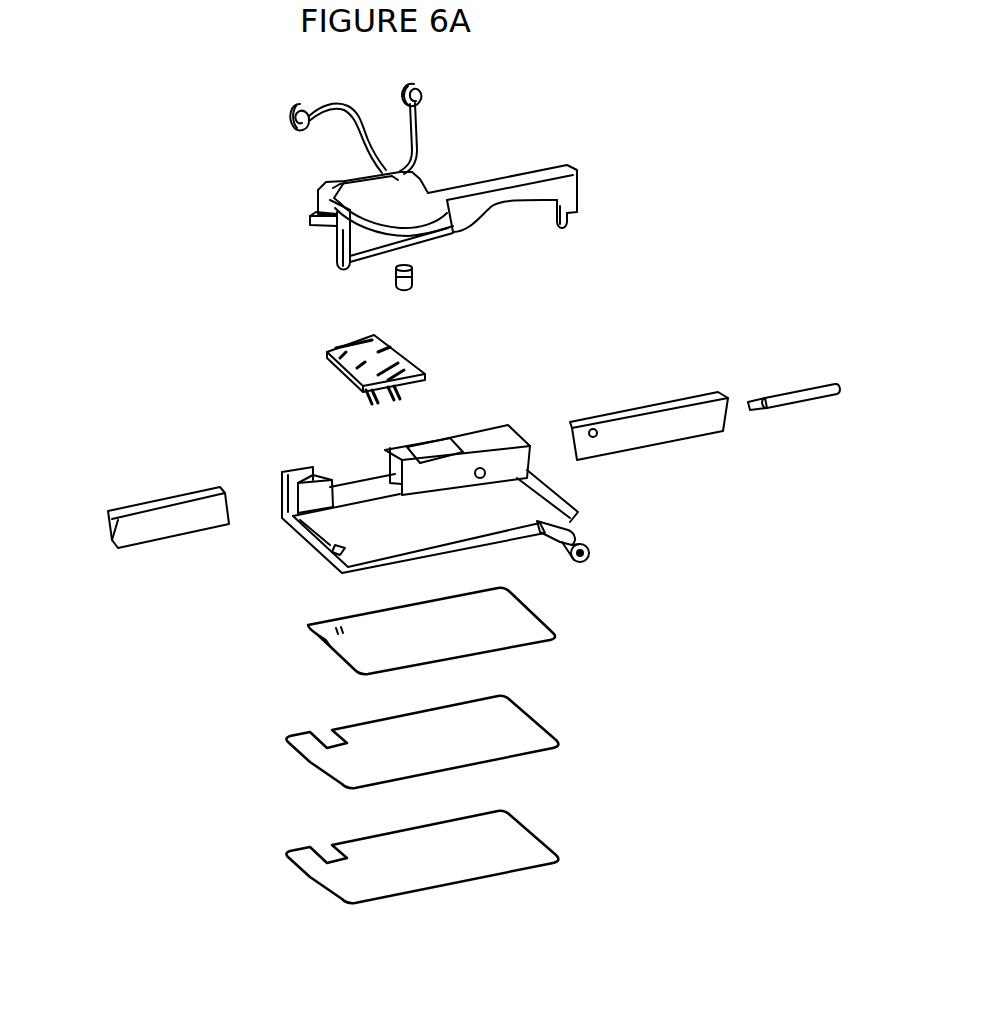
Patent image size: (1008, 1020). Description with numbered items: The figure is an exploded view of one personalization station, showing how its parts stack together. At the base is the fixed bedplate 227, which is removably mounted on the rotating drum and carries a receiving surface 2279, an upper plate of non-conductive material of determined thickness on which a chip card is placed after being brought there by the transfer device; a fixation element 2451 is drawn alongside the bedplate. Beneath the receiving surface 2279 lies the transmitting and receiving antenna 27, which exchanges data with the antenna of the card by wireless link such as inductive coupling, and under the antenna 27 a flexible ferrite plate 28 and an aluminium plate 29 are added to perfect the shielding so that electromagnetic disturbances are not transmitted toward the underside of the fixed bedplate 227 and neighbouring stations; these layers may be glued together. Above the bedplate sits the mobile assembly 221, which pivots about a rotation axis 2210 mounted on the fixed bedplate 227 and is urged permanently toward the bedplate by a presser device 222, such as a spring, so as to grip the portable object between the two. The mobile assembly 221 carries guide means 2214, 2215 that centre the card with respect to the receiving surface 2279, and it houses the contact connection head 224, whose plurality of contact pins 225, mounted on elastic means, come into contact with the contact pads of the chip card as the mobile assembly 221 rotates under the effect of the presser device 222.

The mobile assembly 221 is at (588, 164).
The presser device 222 is at (290, 113).
The rotation axis 2210 is at (310, 219).
The guide means 2214 is at (576, 222).
The guide means 2215 is at (396, 278).
The contact connection head 224 is at (418, 353).
The contact pins 225 is at (398, 392).
The fixed bedplate 227 is at (302, 548).
The receiving surface 2279 is at (416, 523).
The shaft 2451 is at (570, 540).
The antenna 27 is at (552, 617).
The flexible ferrite plate 28 is at (550, 729).
The aluminium plate 29 is at (543, 841).